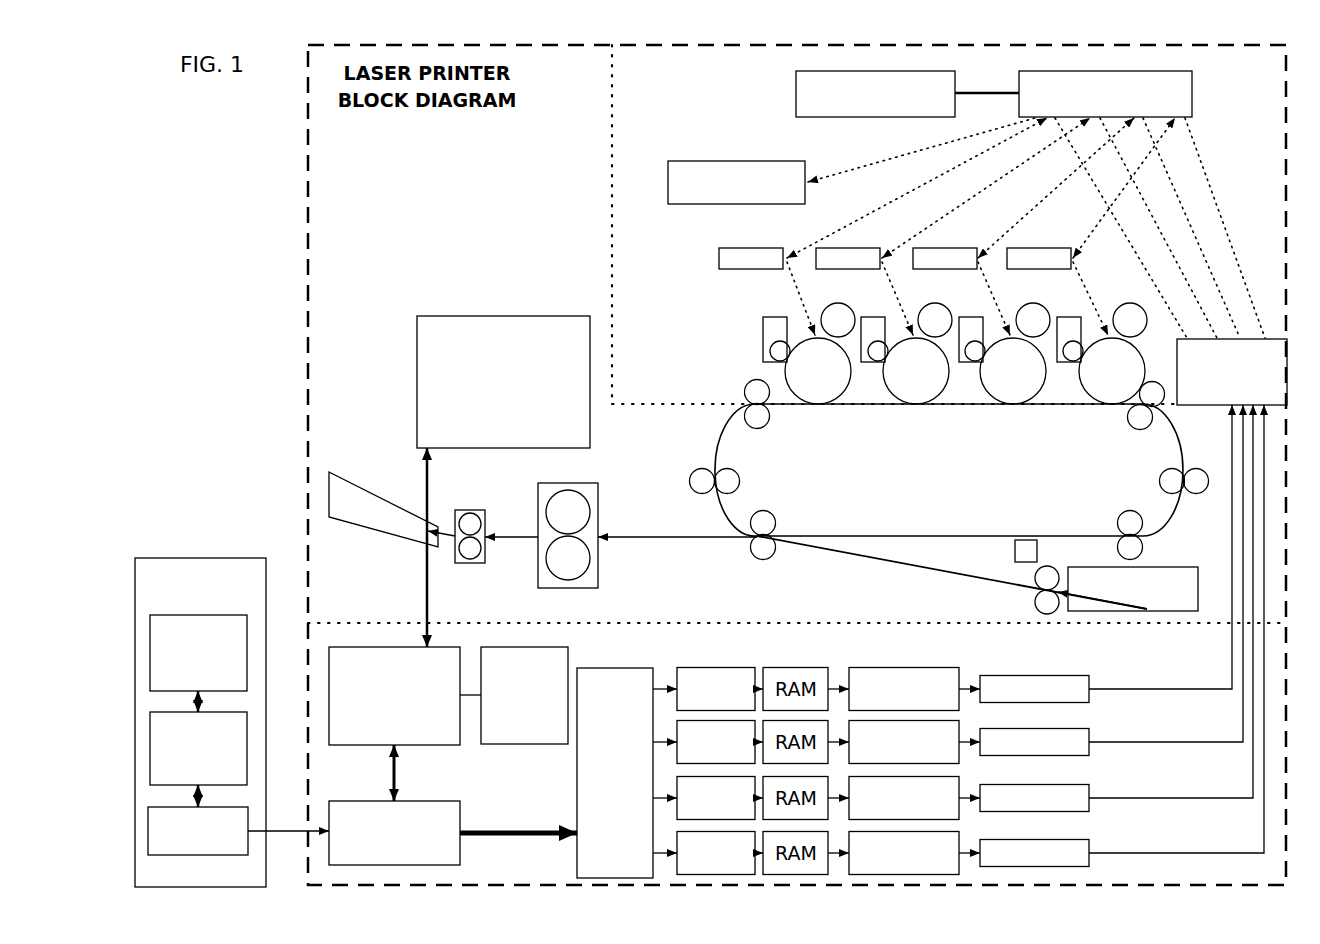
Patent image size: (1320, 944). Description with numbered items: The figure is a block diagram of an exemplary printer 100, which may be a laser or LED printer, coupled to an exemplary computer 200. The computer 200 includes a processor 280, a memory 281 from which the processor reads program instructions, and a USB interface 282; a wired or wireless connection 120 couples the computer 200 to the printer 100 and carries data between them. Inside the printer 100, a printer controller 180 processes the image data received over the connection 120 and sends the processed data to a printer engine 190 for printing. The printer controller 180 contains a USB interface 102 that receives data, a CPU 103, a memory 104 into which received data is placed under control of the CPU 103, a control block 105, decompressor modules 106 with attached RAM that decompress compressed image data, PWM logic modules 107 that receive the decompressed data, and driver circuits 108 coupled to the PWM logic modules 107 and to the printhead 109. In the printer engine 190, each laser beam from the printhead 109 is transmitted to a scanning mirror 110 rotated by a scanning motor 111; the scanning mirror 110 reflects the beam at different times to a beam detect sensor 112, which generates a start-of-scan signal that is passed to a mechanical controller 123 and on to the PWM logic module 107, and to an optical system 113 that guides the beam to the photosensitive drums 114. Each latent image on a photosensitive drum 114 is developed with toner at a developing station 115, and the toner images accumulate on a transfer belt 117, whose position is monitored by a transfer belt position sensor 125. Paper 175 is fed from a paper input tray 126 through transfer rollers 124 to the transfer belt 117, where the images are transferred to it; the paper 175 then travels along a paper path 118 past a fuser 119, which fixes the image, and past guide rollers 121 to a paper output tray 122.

The printer 100 is at (308, 388).
The USB interface 102 is at (453, 842).
The CPU 103 is at (415, 724).
The memory 104 is at (524, 695).
The control block 105 is at (627, 773).
The decompressor module 106 is at (720, 771).
The PWM logic module 107 is at (914, 771).
The driver circuit 108 is at (751, 380).
The printhead 109 is at (1232, 372).
The scanning mirror 110 is at (1036, 204).
The scanning motor 111 is at (907, 94).
The beam detect sensor 112 is at (736, 182).
The optical system 113 is at (738, 247).
The photosensitive drum 114 is at (1143, 373).
The developing station 115 is at (760, 338).
The transfer belt 117 is at (716, 447).
The paper path 118 is at (677, 516).
The fuser 119 is at (598, 556).
The connection 120 is at (302, 826).
The guide rollers 121 is at (478, 507).
The paper output tray 122 is at (373, 494).
The mechanical controller 123 is at (503, 481).
The transfer rollers 124 is at (770, 556).
The transfer belt position sensor 125 is at (1012, 556).
The paper input tray 126 is at (1133, 589).
The paper 175 is at (952, 582).
The printer controller 180 is at (368, 621).
The printer engine 190 is at (608, 196).
The computer 200 is at (200, 722).
The processor 280 is at (198, 759).
The memory 281 is at (198, 663).
The USB interface 282 is at (198, 831).